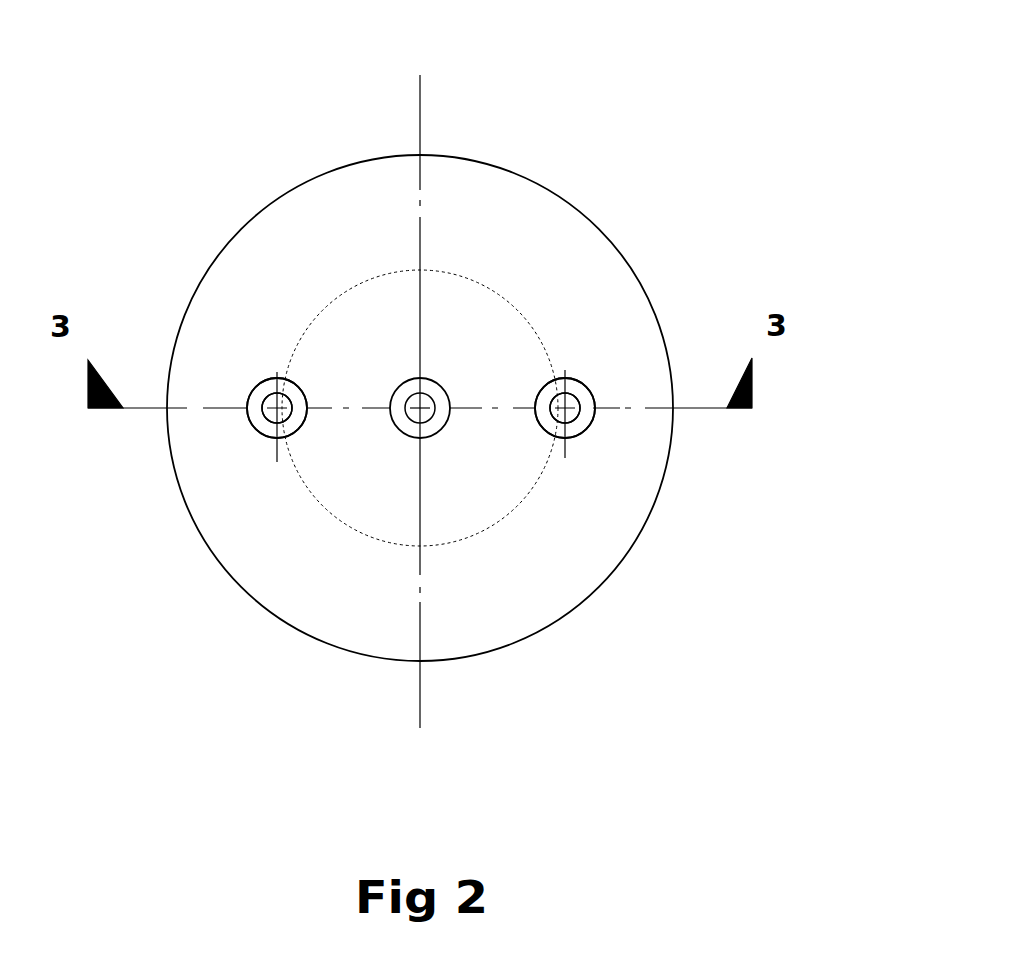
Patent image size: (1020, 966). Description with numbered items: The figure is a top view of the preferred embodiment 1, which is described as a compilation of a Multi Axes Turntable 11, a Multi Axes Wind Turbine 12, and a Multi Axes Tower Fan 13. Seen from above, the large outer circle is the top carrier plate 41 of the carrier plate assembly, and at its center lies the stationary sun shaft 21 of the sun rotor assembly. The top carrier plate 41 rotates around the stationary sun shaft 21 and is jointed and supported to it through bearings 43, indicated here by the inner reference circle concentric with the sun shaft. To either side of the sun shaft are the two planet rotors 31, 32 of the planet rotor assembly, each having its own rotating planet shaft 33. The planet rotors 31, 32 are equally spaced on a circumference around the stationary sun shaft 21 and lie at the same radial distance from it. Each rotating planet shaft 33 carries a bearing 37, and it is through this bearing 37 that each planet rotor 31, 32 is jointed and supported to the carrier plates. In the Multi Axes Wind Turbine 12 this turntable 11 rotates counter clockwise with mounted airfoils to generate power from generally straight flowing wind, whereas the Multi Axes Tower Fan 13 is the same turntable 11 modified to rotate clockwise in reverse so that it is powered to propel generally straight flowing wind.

The preferred embodiment 1 is at (790, 103).
The Multi Axes Turntable 11 is at (763, 215).
The Multi Axes Wind Turbine 12 is at (645, 421).
The Multi Axes Tower Fan 13 is at (645, 438).
The stationary sun shaft 21 is at (423, 393).
The planet rotor 31 is at (563, 395).
The planet rotor 32 is at (277, 397).
The rotating planet shaft 33 is at (423, 349).
The bearing 37 is at (263, 435).
The top carrier plate 41 is at (330, 173).
The bearing 43 is at (427, 435).